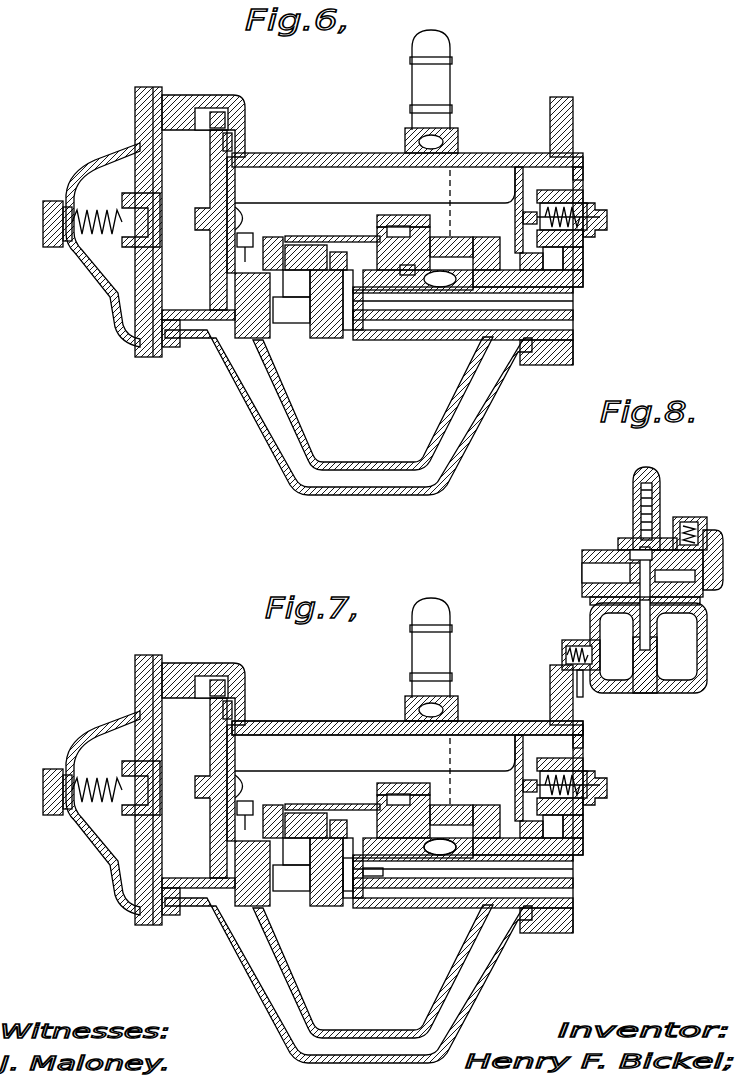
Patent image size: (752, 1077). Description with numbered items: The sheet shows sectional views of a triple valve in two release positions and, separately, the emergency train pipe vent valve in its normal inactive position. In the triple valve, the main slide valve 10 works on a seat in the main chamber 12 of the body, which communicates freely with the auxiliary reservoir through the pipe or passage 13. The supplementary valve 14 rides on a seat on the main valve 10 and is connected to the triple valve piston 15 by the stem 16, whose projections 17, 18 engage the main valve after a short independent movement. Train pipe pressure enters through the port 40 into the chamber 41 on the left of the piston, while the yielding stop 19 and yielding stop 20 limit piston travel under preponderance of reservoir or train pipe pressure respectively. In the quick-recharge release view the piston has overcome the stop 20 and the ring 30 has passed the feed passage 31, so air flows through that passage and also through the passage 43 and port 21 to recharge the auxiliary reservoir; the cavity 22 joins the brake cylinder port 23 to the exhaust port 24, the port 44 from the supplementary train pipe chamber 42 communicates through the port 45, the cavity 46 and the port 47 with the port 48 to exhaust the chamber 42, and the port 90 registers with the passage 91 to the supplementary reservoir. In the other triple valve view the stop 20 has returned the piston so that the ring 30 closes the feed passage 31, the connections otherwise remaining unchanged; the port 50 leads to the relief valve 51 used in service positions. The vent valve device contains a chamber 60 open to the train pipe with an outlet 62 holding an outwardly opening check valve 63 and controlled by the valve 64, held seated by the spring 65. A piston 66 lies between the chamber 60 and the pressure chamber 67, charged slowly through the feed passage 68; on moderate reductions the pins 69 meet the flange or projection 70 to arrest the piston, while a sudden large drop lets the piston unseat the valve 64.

In FIG. 6, the main slide valve 10 is at (303, 250).
In FIG. 7, the main slide valve 10 is at (332, 797).
In FIG. 7, the main chamber 12 is at (407, 718).
In FIG. 6, the pipe or passage 13 is at (578, 264).
In FIG. 7, the pipe or passage 13 is at (551, 828).
In FIG. 6, the supplementary valve 14 is at (412, 224).
In FIG. 7, the supplementary valve 14 is at (403, 772).
In FIG. 6, the triple valve piston 15 is at (212, 184).
In FIG. 7, the triple valve piston 15 is at (200, 788).
In FIG. 6, the stem 16 is at (250, 214).
In FIG. 7, the stem 16 is at (250, 774).
In FIG. 6, the projection 17 is at (249, 250).
In FIG. 7, the projection 17 is at (249, 819).
In FIG. 6, the projection 18 is at (548, 252).
In FIG. 7, the projection 18 is at (584, 827).
In FIG. 6, the yielding stop 19 is at (150, 222).
In FIG. 6, the yielding stop 20 is at (600, 218).
In FIG. 7, the yielding stop 20 is at (560, 751).
In FIG. 6, the port 21 is at (276, 240).
In FIG. 7, the port 21 is at (282, 790).
In FIG. 7, the cavity 22 is at (375, 900).
In FIG. 6, the brake cylinder port 23 is at (565, 314).
In FIG. 7, the brake cylinder port 23 is at (463, 909).
In FIG. 6, the exhaust port 24 is at (565, 334).
In FIG. 7, the exhaust port 24 is at (463, 926).
In FIG. 6, the ring 30 is at (232, 138).
In FIG. 7, the ring 30 is at (250, 707).
In FIG. 6, the feed passage 31 is at (216, 113).
In FIG. 7, the feed passage 31 is at (226, 673).
In FIG. 6, the port 40 is at (268, 418).
In FIG. 7, the port 40 is at (348, 980).
In FIG. 6, the chamber 41 is at (105, 272).
In FIG. 7, the chamber 41 is at (91, 813).
In FIG. 6, the supplementary train pipe chamber 42 is at (373, 403).
In FIG. 7, the supplementary train pipe chamber 42 is at (373, 971).
In FIG. 6, the passage 43 is at (278, 318).
In FIG. 7, the passage 43 is at (289, 896).
In FIG. 6, the port 44 is at (296, 292).
In FIG. 7, the port 44 is at (301, 866).
In FIG. 6, the port 45 is at (338, 256).
In FIG. 7, the port 45 is at (333, 886).
In FIG. 6, the cavity 46 is at (396, 231).
In FIG. 7, the cavity 46 is at (399, 795).
In FIG. 6, the port 47 is at (410, 275).
In FIG. 7, the port 47 is at (345, 792).
In FIG. 6, the port 48 is at (346, 300).
In FIG. 7, the port 48 is at (339, 891).
In FIG. 7, the port 50 is at (449, 880).
In FIG. 6, the safety or relief valve 51 is at (442, 62).
In FIG. 8, the chamber 60 is at (607, 566).
In FIG. 8, the outlet 62 is at (692, 597).
In FIG. 8, the check valve 63 is at (697, 533).
In FIG. 8, the valve 64 is at (650, 560).
In FIG. 8, the spring 65 is at (657, 497).
In FIG. 8, the piston 66 is at (610, 603).
In FIG. 8, the pressure chamber 67 is at (607, 630).
In FIG. 8, the feed passage 68 is at (652, 625).
In FIG. 8, the pins 69 is at (612, 575).
In FIG. 8, the flange or projection 70 is at (633, 557).
In FIG. 6, the port 90 is at (476, 240).
In FIG. 7, the port 90 is at (499, 778).
In FIG. 6, the passage 91 is at (565, 291).
In FIG. 7, the passage 91 is at (486, 852).